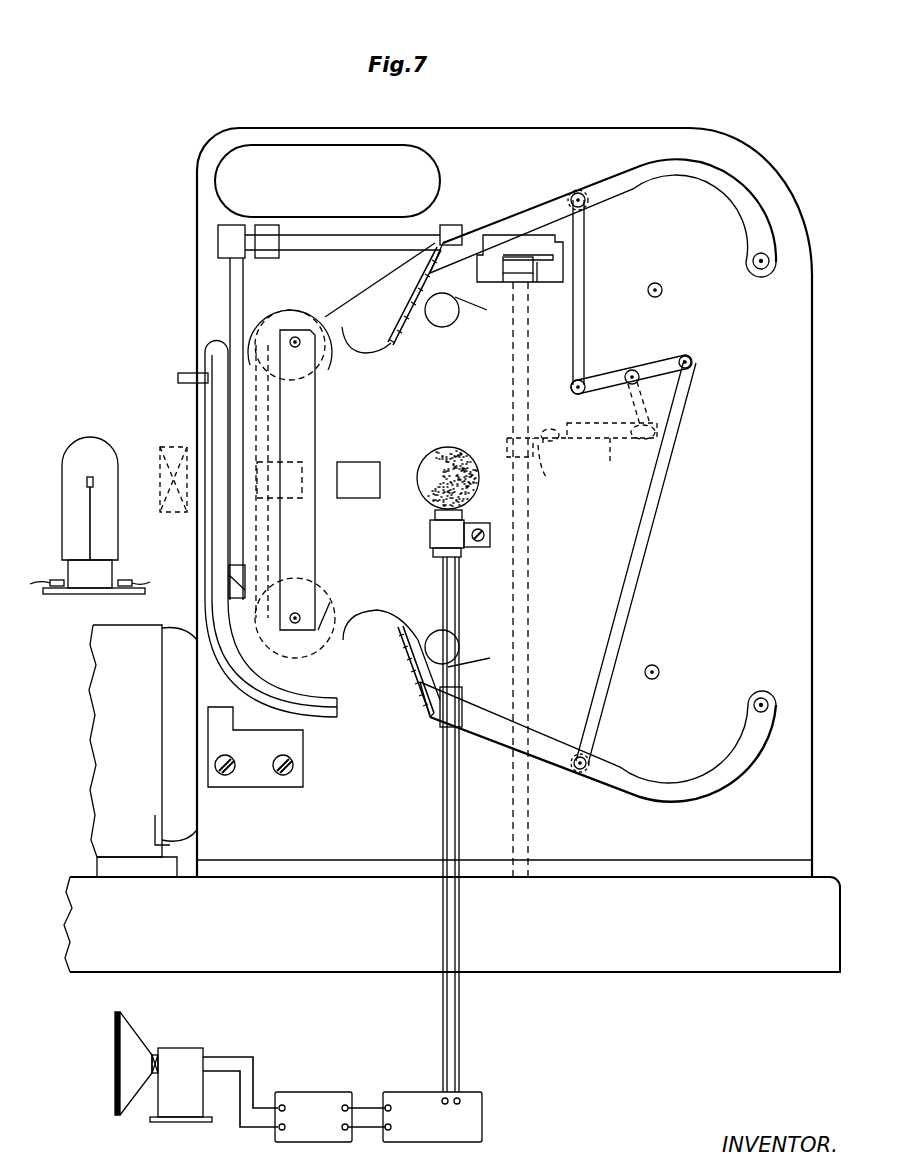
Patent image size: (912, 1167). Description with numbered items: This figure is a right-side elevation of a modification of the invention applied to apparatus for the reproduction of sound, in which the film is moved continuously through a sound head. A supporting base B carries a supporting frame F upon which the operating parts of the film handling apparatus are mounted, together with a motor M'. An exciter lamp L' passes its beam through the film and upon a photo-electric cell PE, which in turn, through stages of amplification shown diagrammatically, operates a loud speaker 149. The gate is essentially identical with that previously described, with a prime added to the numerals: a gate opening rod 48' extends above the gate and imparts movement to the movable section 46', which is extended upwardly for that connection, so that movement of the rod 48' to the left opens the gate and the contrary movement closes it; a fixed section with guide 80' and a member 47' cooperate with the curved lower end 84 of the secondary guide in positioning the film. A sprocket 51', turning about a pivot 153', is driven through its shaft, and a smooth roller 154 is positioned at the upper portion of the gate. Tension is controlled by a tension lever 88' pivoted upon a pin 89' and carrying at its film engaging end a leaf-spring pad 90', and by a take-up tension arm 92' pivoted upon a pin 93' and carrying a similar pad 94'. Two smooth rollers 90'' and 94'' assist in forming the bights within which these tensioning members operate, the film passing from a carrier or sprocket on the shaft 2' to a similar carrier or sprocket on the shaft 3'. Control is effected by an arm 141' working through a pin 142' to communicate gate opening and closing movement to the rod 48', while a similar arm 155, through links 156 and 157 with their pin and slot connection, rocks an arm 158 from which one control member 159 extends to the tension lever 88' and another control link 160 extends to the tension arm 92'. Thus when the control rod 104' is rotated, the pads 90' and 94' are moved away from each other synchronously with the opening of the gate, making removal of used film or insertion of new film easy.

The supporting frame F is at (504, 502).
The supporting base B is at (452, 924).
The gate opening rod 48' is at (340, 253).
The movable section 46' is at (193, 429).
The guide member 47' is at (239, 525).
The curved lower end 84 is at (242, 682).
The exciter lamp L' is at (90, 495).
The motor M' is at (143, 751).
The guide 80' is at (316, 480).
The smooth roller 154 is at (323, 365).
The sprocket 51' is at (323, 618).
The pivot 153' is at (334, 588).
The pad 90' is at (383, 313).
The smooth roller 90'' is at (462, 320).
The tension lever 88' is at (603, 209).
The pin 89' is at (805, 258).
The pin 142' is at (558, 258).
The arm 141' is at (556, 294).
The control rod 104' is at (551, 579).
The shaft 2' is at (672, 275).
The shaft 3' is at (676, 656).
The control member 159 is at (585, 331).
The arm 158 is at (667, 355).
The link 157 is at (630, 407).
The link 156 is at (612, 455).
The arm 155 is at (546, 460).
The control link 160 is at (652, 544).
The photo-electric cell PE is at (463, 450).
The pad 94' is at (391, 653).
The smooth roller 94'' is at (469, 635).
The take-up tension arm 92' is at (598, 749).
The pin 93' is at (776, 687).
The loud speaker 149 is at (182, 1055).